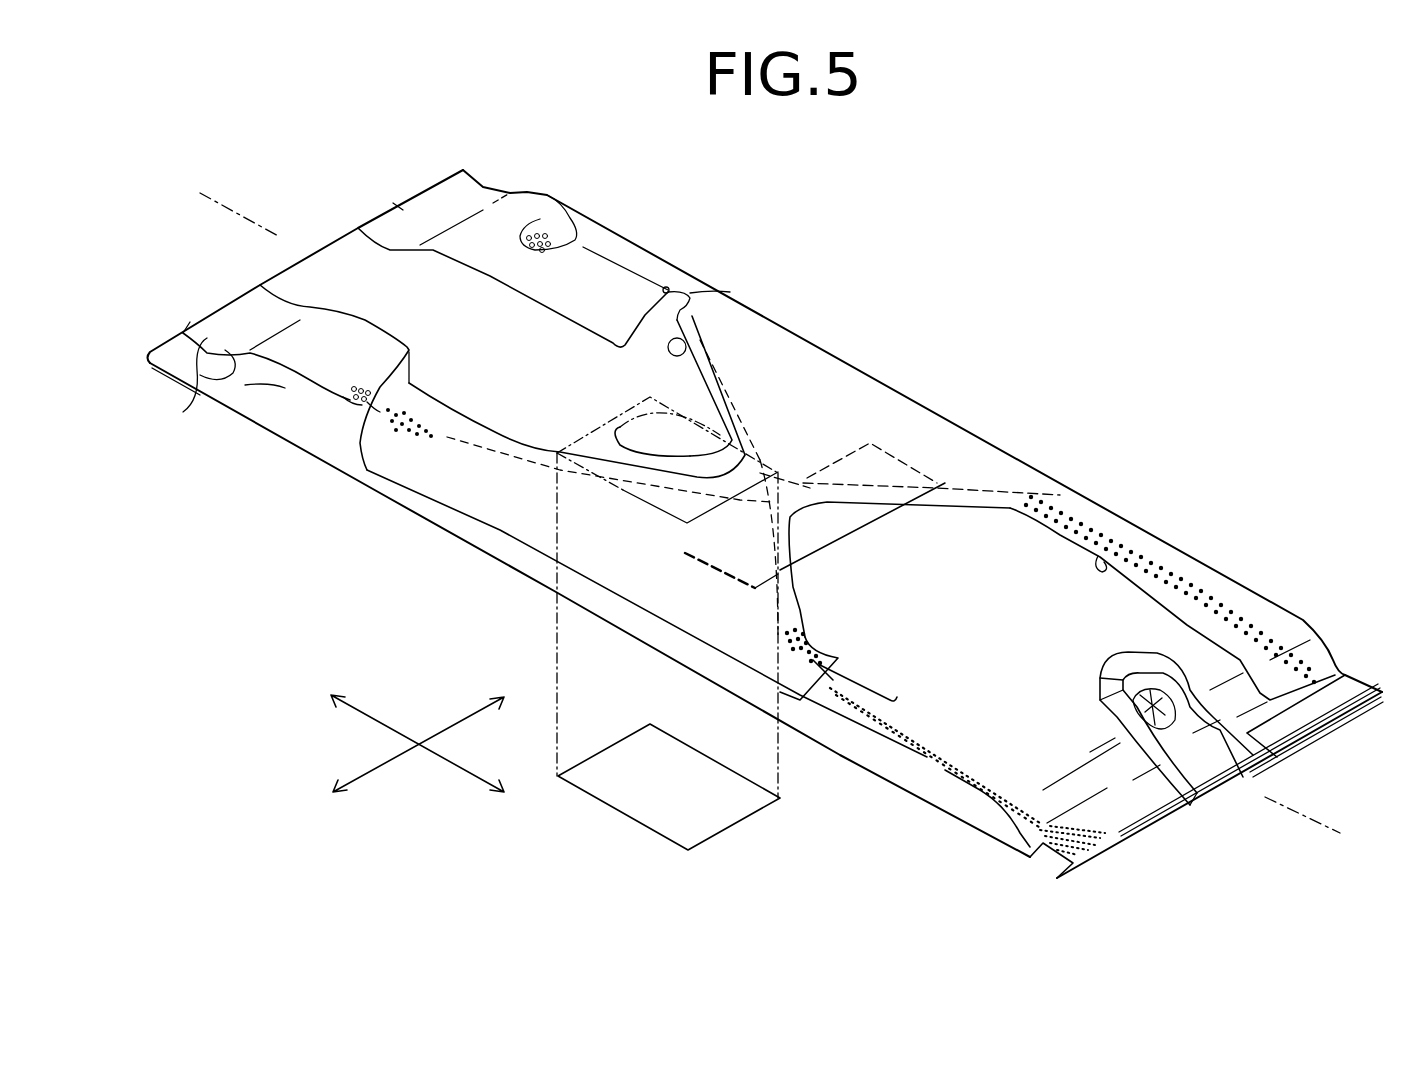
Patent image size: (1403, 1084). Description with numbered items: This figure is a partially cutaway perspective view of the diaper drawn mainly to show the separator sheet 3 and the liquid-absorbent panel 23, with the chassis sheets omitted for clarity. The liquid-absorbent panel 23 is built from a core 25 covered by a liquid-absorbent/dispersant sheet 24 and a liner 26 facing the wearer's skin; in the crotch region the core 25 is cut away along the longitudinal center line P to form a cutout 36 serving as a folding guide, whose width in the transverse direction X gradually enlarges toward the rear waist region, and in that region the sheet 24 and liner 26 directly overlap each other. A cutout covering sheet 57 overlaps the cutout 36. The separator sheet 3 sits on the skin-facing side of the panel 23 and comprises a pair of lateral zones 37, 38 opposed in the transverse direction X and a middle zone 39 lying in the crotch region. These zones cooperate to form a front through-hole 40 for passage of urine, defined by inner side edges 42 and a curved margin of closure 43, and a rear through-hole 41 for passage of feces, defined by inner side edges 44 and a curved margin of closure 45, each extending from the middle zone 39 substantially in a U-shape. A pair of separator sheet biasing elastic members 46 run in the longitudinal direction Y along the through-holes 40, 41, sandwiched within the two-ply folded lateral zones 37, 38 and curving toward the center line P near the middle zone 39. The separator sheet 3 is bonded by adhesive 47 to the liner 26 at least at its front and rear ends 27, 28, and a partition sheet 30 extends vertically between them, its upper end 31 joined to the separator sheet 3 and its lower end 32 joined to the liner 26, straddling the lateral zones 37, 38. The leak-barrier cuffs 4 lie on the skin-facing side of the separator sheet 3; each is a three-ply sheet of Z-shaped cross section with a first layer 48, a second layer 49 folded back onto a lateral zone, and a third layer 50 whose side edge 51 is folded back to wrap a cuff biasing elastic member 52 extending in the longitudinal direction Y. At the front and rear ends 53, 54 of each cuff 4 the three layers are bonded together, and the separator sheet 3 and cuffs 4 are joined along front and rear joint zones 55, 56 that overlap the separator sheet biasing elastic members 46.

The separator sheet 3 is at (484, 421).
The leak-barrier cuffs 4 is at (360, 196).
The liquid-absorbent panel 23 is at (1224, 834).
The liquid-absorbent/dispersant sheet 24 is at (1140, 660).
The core 25 is at (1127, 703).
The liner facing the wearer's skin 26 is at (980, 735).
The front end 27 is at (1317, 737).
The rear end 28 is at (393, 203).
The partition sheet 30 is at (830, 530).
The upper end 31 is at (850, 450).
The lower end 32 is at (682, 556).
The cutout 36 is at (660, 440).
The lateral zone 37 is at (530, 527).
The lateral zone 38 is at (862, 387).
The middle zone 39 is at (760, 470).
The front through-hole 40 is at (1257, 750).
The rear through-hole 41 is at (343, 262).
The inner side edges 42 is at (1103, 550).
The curved margin of closure 43 is at (927, 505).
The inner side edges 44 is at (687, 353).
The curved margin of closure 45 is at (607, 455).
The separator sheet biasing elastic members 46 is at (740, 400).
The adhesive 47 is at (1113, 827).
The first layer 48 is at (1073, 877).
The second layer 49 is at (563, 212).
The third layer 50 is at (630, 283).
The side edge 51 is at (620, 253).
The cuff biasing elastic member 52 is at (575, 225).
The front end 53 is at (1317, 708).
The rear end 54 is at (440, 190).
The front joint zone 55 is at (1052, 520).
The rear joint zone 56 is at (400, 407).
The cutout covering sheet 57 is at (642, 805).
The longitudinal center line P is at (218, 202).
The transverse direction X is at (385, 780).
The longitudinal direction Y is at (465, 785).